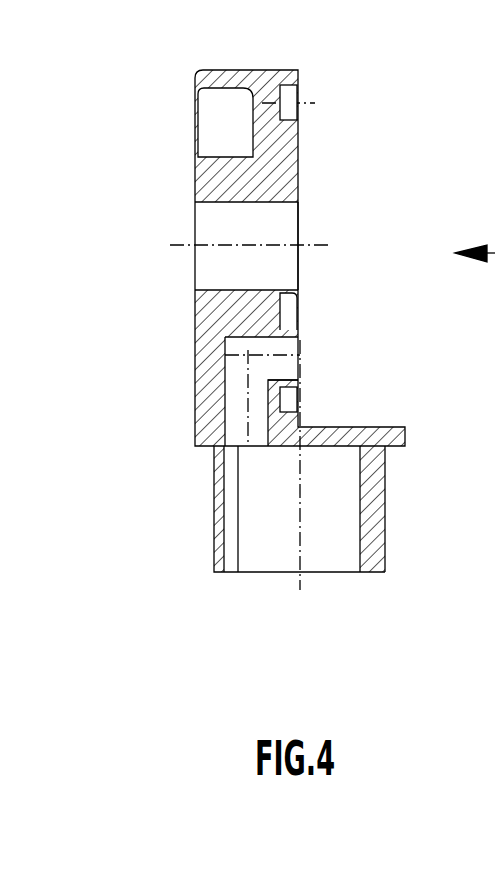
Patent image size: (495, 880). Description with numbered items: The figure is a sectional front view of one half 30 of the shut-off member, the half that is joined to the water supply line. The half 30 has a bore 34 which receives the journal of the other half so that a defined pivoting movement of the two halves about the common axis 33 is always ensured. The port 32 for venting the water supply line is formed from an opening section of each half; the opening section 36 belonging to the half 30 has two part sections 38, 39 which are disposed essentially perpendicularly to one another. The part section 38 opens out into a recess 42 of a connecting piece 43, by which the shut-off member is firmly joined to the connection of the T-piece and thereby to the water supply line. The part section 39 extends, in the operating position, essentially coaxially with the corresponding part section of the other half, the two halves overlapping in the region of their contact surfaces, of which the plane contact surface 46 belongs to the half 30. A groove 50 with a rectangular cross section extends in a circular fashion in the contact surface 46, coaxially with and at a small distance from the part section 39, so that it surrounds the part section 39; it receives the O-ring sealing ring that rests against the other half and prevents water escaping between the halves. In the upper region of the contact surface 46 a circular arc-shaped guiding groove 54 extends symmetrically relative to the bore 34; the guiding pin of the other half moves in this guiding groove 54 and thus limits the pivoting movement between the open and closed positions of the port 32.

The half 30 is at (166, 420).
The port 32 is at (309, 347).
The common axis 33 is at (298, 243).
The bore 34 is at (212, 222).
The opening section 36 is at (232, 358).
The part section 38 is at (235, 418).
The part section 39 is at (283, 370).
The recess 42 is at (332, 517).
The connecting piece 43 is at (370, 556).
The contact surface 46 is at (292, 378).
The groove 50 is at (292, 320).
The guiding groove 54 is at (287, 94).